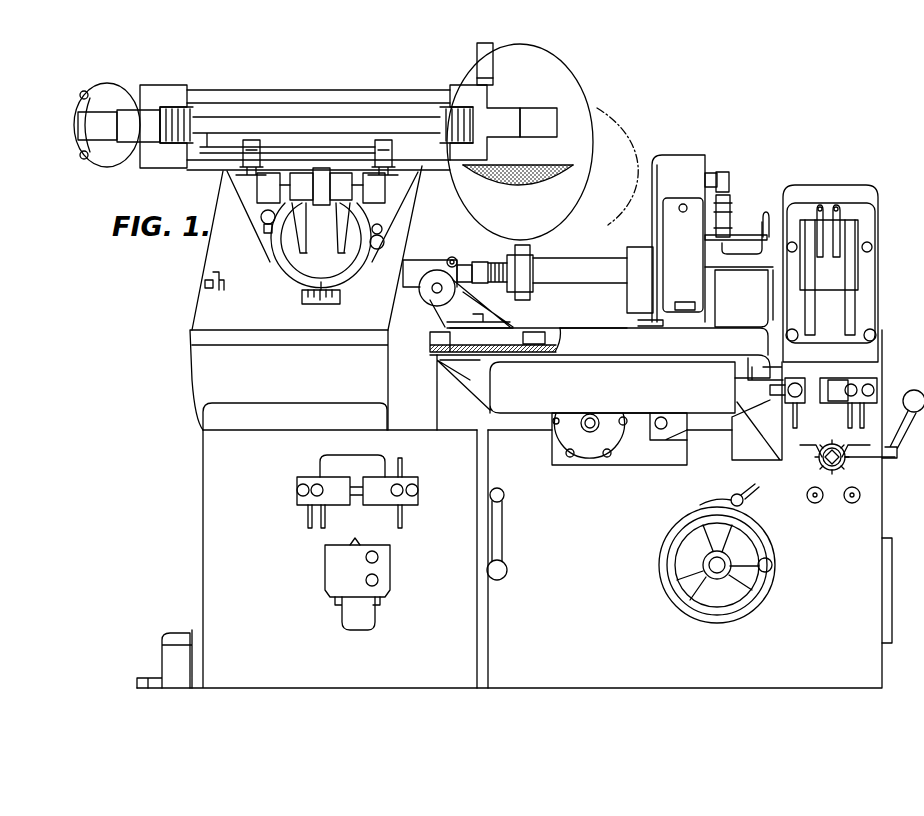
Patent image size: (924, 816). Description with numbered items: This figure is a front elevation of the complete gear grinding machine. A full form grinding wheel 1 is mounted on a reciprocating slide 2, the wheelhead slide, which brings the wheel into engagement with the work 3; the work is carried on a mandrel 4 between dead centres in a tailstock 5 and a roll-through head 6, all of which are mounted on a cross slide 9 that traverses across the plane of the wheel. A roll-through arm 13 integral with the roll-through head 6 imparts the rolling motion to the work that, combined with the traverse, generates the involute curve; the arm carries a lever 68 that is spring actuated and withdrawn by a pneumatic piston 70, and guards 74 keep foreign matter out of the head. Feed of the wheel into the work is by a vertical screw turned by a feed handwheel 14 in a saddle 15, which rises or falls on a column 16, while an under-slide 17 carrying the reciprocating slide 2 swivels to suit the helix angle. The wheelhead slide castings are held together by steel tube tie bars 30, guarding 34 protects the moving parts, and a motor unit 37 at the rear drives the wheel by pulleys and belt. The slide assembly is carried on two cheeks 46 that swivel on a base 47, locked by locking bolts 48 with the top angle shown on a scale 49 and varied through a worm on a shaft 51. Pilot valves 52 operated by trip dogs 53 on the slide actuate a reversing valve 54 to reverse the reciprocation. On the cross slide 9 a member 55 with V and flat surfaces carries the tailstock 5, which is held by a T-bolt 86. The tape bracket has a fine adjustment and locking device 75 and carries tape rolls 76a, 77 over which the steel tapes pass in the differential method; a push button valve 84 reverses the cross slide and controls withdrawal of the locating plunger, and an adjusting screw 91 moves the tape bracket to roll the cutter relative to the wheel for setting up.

The full form grinding wheel 1 is at (547, 187).
The reciprocating slide 2 is at (227, 77).
The work 3 is at (515, 248).
The mandrel 4 is at (588, 277).
The tailstock 5 is at (420, 262).
The roll-through head 6 is at (714, 264).
The cross slide 9 is at (600, 379).
The roll-through arm 13 is at (778, 235).
The feed handwheel 14 is at (767, 538).
The saddle 15 is at (514, 509).
The column 16 is at (369, 542).
The under-slide 17 is at (295, 398).
The steel tube tie bars 30 is at (313, 98).
The guarding 34 is at (97, 123).
The motor unit 37 is at (107, 163).
The cheeks 46 is at (400, 200).
The base 47 is at (289, 368).
The locking bolts 48 is at (261, 220).
The scale 49 is at (320, 303).
The shaft 51 is at (208, 283).
The pilot valves 52 is at (262, 187).
The trip dogs 53 is at (252, 143).
The reversing valve 54 is at (321, 245).
The member having V and flat surfaces 55 is at (532, 335).
The lever 68 is at (729, 184).
The pneumatic piston 70 is at (718, 220).
The guards 74 is at (681, 156).
The fine adjustment and locking device 75 is at (903, 420).
The tape roll 76a is at (833, 237).
The tape roll 77 is at (850, 316).
The push button valve 84 is at (787, 398).
The T-bolt 86 is at (476, 321).
The adjusting screw 91 is at (846, 463).